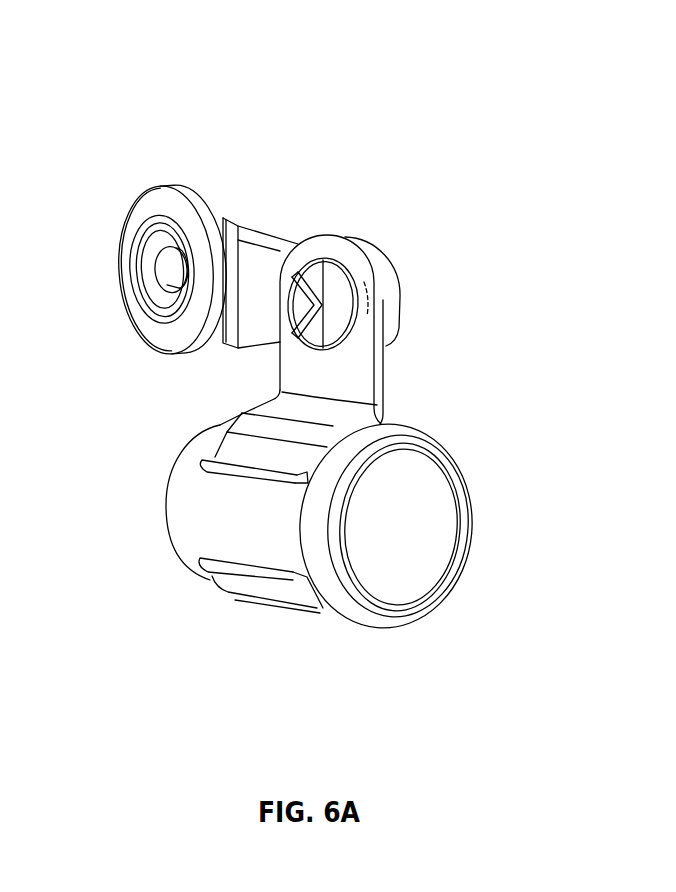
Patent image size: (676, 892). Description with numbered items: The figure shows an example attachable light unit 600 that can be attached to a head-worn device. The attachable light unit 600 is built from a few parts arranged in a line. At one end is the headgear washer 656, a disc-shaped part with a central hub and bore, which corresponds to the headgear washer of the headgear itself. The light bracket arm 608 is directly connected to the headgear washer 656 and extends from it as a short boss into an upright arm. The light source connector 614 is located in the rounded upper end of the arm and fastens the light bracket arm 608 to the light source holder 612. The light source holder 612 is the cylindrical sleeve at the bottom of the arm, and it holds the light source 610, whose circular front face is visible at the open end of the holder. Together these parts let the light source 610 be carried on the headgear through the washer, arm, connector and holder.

The attachable light unit 600 is at (327, 341).
The headgear washer 656 is at (133, 338).
The light bracket arm 608 is at (240, 355).
The light source holder 612 is at (390, 380).
The light source connector 614 is at (330, 258).
The light source 610 is at (478, 485).